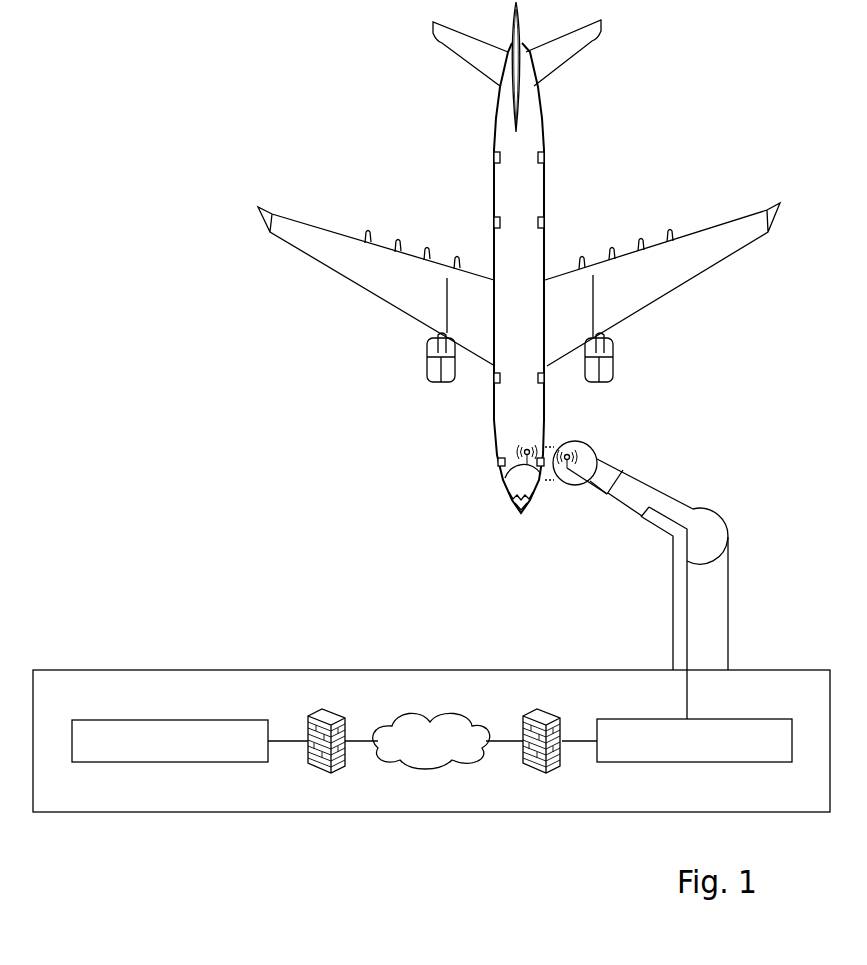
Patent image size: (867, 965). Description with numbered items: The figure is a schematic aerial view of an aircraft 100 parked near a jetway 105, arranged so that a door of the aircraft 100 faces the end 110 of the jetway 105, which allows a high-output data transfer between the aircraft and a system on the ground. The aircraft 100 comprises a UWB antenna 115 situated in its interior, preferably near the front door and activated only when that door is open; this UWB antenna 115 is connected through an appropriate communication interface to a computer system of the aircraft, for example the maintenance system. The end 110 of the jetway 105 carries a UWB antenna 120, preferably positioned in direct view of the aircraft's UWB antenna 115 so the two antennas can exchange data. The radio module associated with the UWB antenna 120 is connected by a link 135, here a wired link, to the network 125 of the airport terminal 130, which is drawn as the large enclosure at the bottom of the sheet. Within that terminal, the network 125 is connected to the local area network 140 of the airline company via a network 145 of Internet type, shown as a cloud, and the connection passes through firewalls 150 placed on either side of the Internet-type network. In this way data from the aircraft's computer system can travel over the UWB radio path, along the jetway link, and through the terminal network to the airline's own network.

The aircraft 100 is at (340, 277).
The jetway 105 is at (685, 502).
The end of jetway 110 is at (588, 443).
The UWB antenna 115 is at (500, 479).
The UWB antenna 120 is at (571, 452).
The network 125 is at (637, 718).
The airport terminal 130 is at (185, 813).
The local area network 140 is at (198, 719).
The network of Internet type 145 is at (437, 752).
The firewalls 150 is at (537, 713).
The link 135 is at (638, 519).